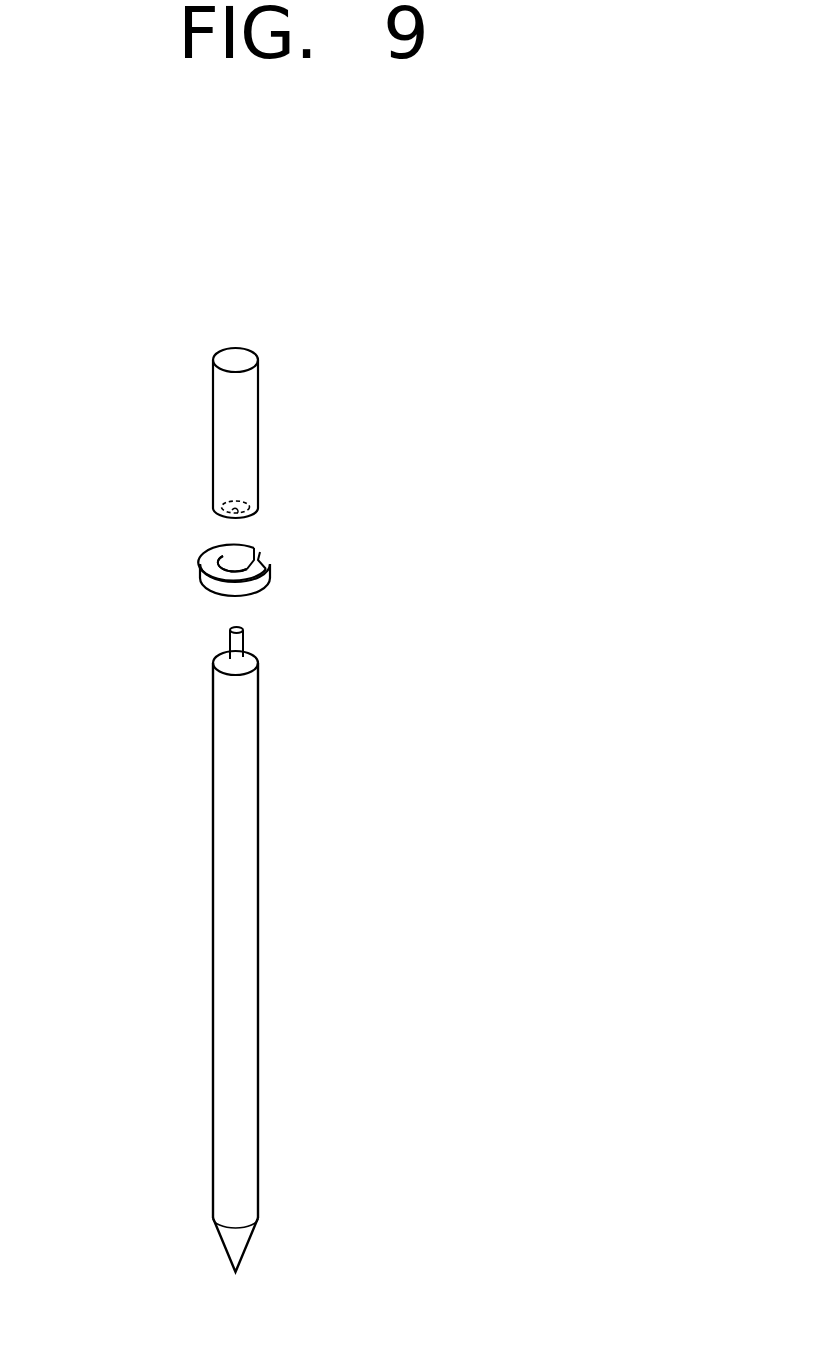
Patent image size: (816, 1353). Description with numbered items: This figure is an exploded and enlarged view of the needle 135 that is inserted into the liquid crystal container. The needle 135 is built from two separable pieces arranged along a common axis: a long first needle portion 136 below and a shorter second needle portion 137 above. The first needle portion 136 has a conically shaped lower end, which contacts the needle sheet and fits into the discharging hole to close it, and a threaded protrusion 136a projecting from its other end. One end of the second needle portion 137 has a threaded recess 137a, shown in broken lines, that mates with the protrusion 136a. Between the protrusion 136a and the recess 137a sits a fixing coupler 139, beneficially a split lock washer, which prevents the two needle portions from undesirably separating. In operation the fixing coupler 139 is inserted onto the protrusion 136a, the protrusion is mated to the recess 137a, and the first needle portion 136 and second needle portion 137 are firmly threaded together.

The needle 135 is at (303, 377).
The second needle portion 137 is at (247, 442).
The threaded recess 137a is at (236, 509).
The fixing coupler 139 is at (270, 578).
The first needle portion 136 is at (245, 897).
The threaded protrusion 136a is at (243, 637).